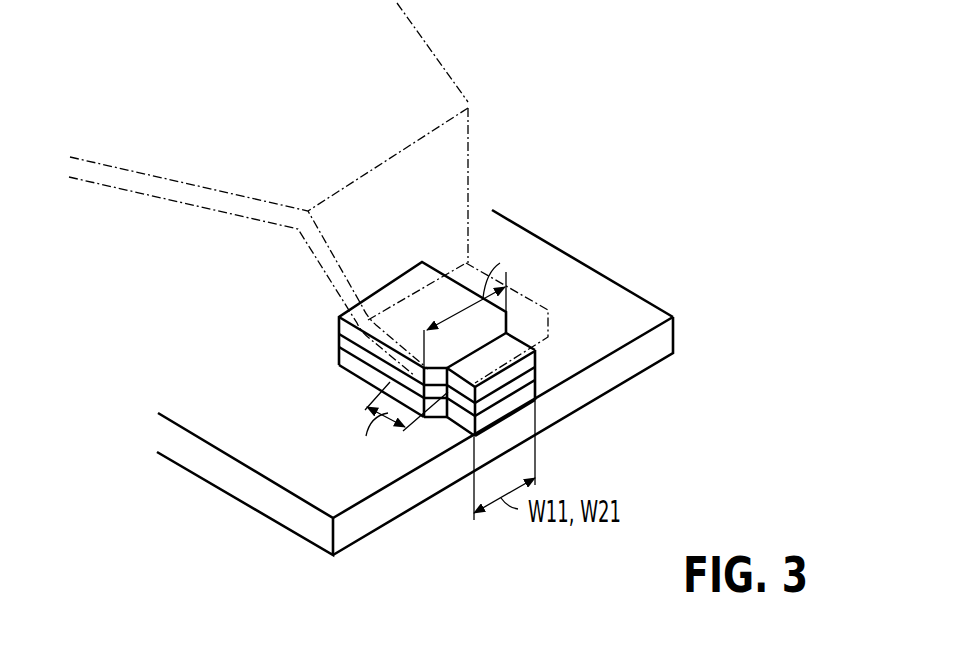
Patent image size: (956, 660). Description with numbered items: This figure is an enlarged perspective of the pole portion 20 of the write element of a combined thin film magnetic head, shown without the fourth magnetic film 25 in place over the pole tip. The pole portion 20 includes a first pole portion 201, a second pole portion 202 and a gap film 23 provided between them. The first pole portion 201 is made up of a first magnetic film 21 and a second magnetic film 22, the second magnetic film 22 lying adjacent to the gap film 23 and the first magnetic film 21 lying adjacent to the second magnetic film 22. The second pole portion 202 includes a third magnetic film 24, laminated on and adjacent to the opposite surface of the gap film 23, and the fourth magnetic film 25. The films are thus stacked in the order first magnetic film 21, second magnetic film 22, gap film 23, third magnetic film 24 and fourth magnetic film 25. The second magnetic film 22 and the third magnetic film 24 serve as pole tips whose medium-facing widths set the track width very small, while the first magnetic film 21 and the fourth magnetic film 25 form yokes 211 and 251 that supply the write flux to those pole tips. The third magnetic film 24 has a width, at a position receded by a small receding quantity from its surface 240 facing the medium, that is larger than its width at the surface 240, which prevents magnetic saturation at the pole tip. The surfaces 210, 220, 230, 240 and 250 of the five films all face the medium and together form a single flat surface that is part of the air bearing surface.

The pole portion 20 is at (478, 301).
The first magnetic film 21 is at (428, 383).
The second magnetic film 22 is at (390, 378).
The gap film 23 is at (352, 362).
The third magnetic film 24 is at (338, 333).
The fourth magnetic film 25 is at (340, 301).
The first pole portion 201 is at (456, 435).
The second pole portion 202 is at (547, 347).
The surface facing opposite the medium 210 is at (480, 450).
The yoke 211 is at (499, 219).
The surface facing opposite the medium 220 is at (533, 390).
The surface facing opposite the medium 230 is at (535, 373).
The surface facing opposite the medium 240 is at (537, 362).
The surface facing opposite the medium 250 is at (548, 326).
The yoke 251 is at (420, 55).